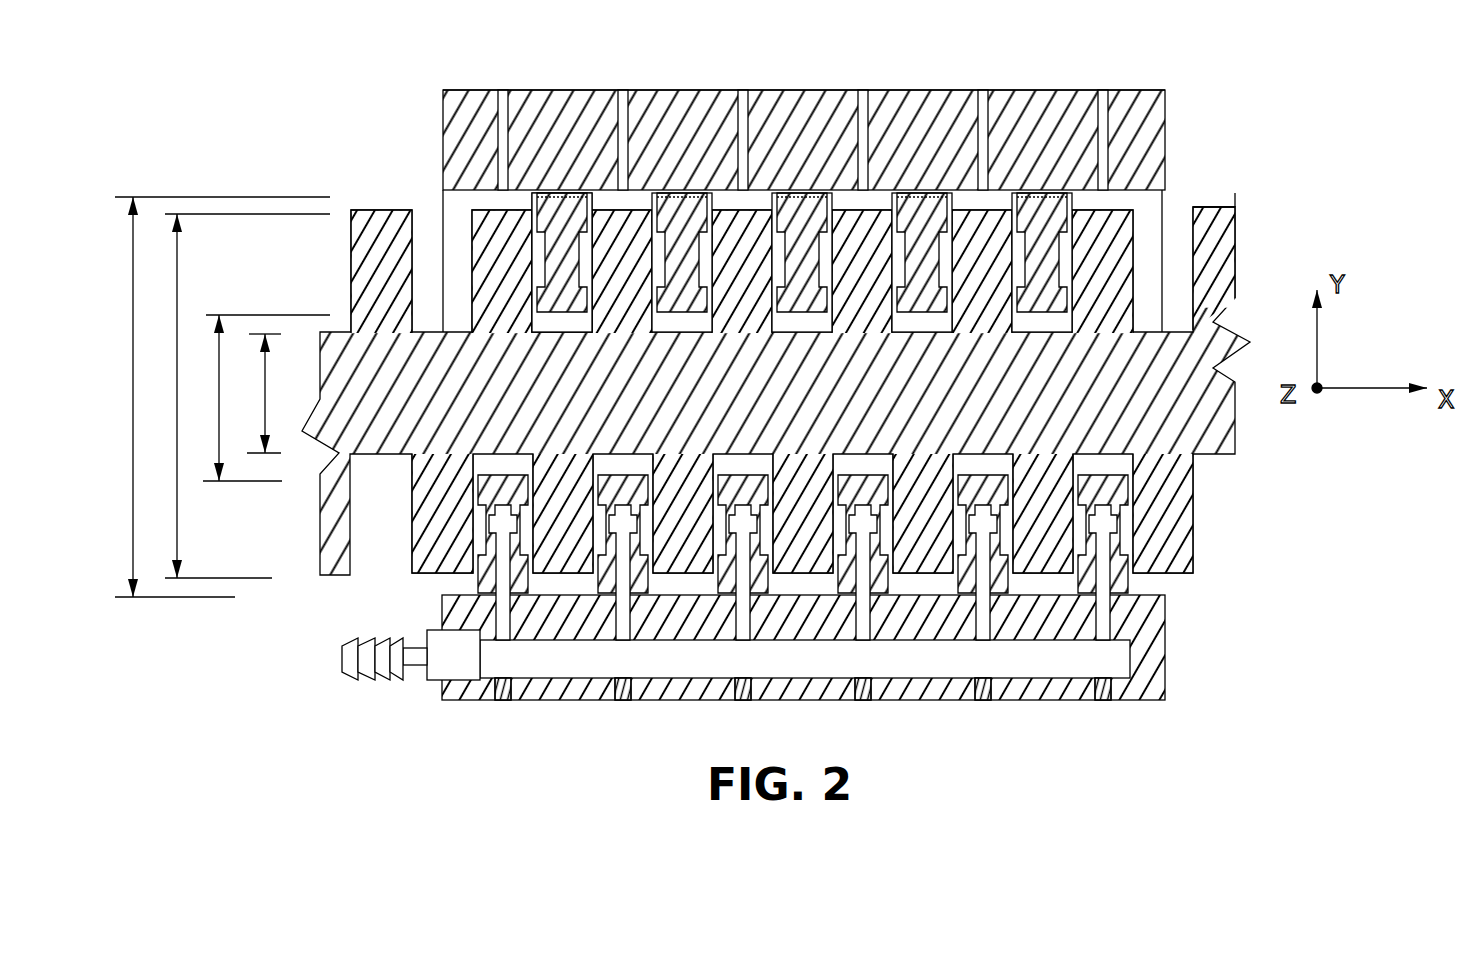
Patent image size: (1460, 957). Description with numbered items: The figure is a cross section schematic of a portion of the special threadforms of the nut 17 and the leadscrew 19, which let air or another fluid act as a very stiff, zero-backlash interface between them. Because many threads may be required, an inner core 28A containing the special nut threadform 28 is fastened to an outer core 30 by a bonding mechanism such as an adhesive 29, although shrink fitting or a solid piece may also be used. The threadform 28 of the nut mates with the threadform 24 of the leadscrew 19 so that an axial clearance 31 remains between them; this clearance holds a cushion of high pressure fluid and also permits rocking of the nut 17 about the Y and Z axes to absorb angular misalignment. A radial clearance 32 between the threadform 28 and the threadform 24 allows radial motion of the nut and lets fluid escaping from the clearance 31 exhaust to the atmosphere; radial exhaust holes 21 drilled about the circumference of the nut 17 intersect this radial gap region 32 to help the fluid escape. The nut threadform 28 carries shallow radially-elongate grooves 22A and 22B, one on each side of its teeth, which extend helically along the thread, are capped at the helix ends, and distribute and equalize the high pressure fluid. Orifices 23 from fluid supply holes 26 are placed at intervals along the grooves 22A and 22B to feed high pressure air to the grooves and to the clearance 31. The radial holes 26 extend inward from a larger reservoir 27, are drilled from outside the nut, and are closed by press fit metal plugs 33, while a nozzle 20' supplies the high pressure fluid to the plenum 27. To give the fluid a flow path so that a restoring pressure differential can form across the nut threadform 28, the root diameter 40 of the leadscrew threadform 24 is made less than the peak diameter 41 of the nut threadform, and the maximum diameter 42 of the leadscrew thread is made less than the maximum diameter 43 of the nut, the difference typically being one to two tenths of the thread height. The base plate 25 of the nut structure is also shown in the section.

The nut 17 is at (1197, 122).
The leadscrew 19 is at (1238, 233).
The nozzle 20' is at (381, 679).
The radial exhaust holes 21 is at (500, 90).
The radially-elongate groove 22A is at (540, 268).
The radially-elongate groove 22B is at (585, 265).
The orifice 23 is at (493, 528).
The threadform of the leadscrew 24 is at (362, 250).
The base plate 25 is at (1128, 575).
The fluid supply holes 26 is at (623, 633).
The reservoir 27 is at (1013, 655).
The threadform of the nut 28 is at (1113, 484).
The inner core 28A is at (1050, 290).
The adhesive 29 is at (802, 195).
The outer core 30 is at (912, 90).
The axial clearance 31 is at (762, 582).
The radial clearance 32 is at (968, 198).
The press fit metal plugs 33 is at (503, 700).
The root diameter 40 is at (264, 393).
The peak diameter 41 is at (266, 398).
The maximum diameter of the leadscrew thread 42 is at (244, 396).
The maximum diameter of the nut 43 is at (222, 397).